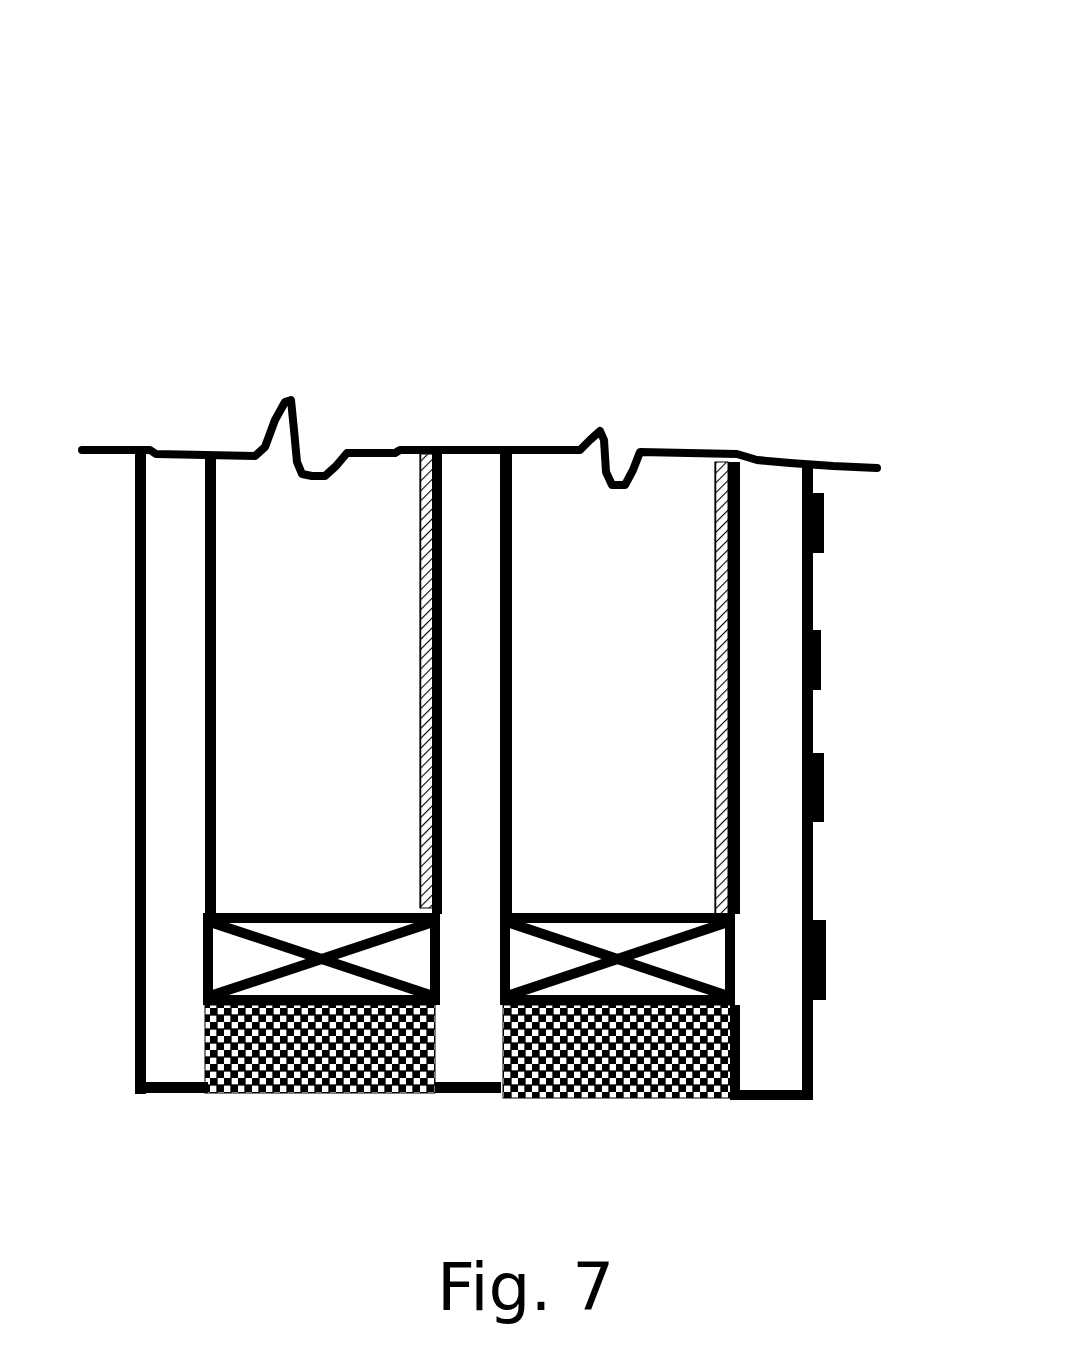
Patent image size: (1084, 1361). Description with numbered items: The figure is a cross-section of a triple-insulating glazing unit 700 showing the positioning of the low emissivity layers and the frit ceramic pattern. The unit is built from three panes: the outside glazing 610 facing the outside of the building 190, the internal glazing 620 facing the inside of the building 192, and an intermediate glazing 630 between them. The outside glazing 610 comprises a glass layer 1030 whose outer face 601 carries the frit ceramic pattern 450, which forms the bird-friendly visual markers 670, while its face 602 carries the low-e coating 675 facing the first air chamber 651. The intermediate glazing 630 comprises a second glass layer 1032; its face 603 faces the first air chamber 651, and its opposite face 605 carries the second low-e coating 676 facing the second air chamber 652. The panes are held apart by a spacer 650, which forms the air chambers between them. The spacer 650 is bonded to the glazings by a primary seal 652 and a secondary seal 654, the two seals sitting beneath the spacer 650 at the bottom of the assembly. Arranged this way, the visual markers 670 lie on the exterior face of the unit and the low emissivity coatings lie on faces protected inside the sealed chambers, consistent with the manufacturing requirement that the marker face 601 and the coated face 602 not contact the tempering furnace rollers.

The triple-insulating glazing unit 700 is at (743, 109).
The internal glazing 620 is at (253, 337).
The intermediate glazing 630 is at (517, 561).
The outside glazing 610 is at (777, 668).
The face 605 is at (437, 450).
The second glass layer 1032 is at (470, 507).
The glass layer 1030 is at (788, 490).
The face 602 is at (708, 505).
The face 601 is at (845, 757).
The face 603 is at (520, 650).
The outside of the building 190 is at (935, 604).
The inside of the building 192 is at (97, 697).
The second air chamber 652 is at (328, 708).
The first air chamber 651 is at (628, 722).
The frit ceramic pattern 450 is at (884, 746).
The low-e coating 675 is at (713, 755).
The second low-e coating 676 is at (420, 797).
The spacer 650 is at (303, 940).
The visual markers 670 is at (823, 948).
The secondary seal 654 is at (302, 1067).